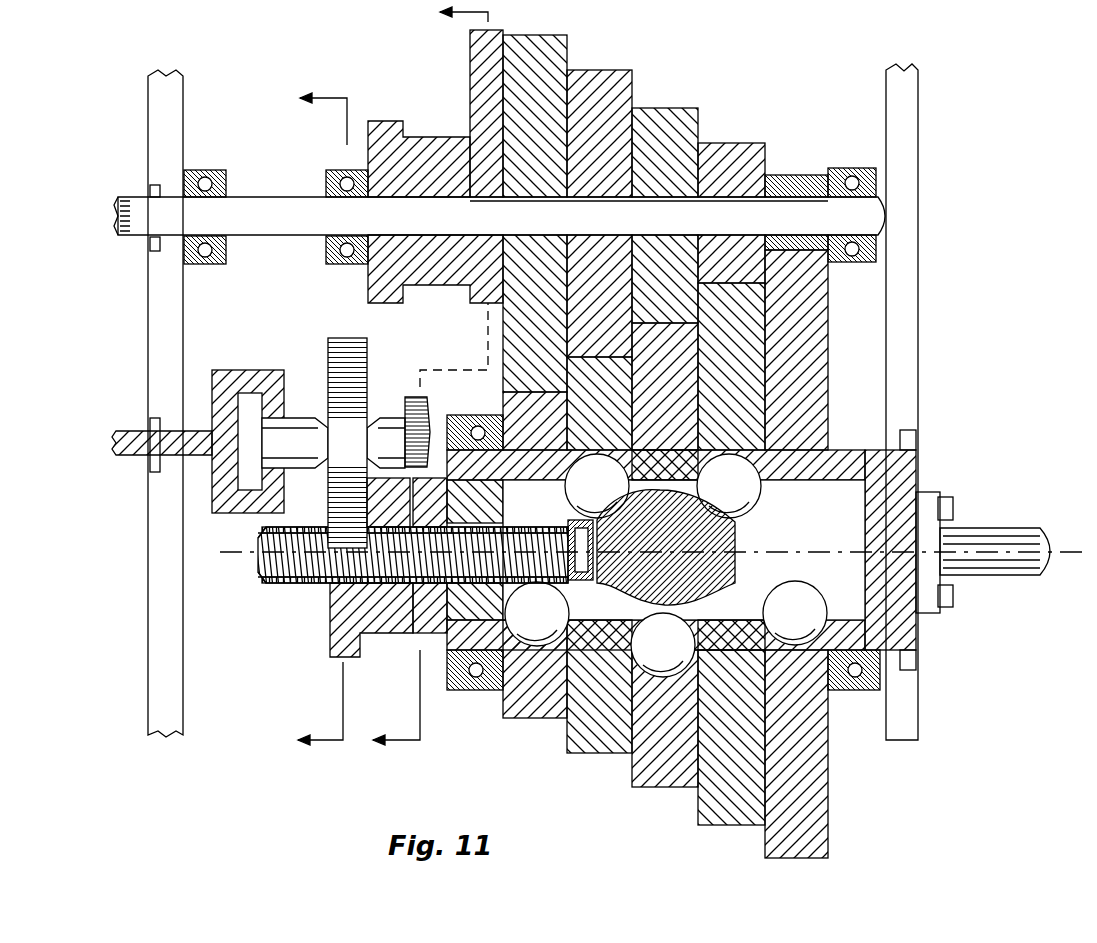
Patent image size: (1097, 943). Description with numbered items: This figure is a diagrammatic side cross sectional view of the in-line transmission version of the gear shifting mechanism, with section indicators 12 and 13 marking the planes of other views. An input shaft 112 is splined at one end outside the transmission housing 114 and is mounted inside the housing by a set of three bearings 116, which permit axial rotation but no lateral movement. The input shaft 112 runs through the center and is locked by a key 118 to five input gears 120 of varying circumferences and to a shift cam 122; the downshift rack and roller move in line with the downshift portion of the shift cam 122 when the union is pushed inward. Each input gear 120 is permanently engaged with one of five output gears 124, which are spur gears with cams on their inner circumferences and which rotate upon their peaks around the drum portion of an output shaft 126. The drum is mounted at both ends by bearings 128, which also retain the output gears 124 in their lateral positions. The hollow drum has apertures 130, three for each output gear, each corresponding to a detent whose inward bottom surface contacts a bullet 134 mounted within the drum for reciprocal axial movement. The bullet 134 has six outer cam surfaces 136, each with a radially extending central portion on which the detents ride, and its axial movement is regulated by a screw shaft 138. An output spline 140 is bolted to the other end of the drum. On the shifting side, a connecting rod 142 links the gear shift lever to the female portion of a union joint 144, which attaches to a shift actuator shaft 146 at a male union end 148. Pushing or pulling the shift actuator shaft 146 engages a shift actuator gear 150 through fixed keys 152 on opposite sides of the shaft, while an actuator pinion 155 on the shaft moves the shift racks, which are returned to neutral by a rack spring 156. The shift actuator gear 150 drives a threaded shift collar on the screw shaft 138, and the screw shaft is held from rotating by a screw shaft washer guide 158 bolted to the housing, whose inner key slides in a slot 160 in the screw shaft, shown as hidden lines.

The section line 12- 12 is at (306, 422).
The section line 13- 13 is at (426, 376).
The input shaft 112 is at (857, 217).
The transmission housing 114 is at (167, 120).
The bearings 116 is at (345, 168).
The key 118 is at (803, 196).
The input gears 120 is at (727, 155).
The shift cam 122 is at (492, 40).
The output gears 124 is at (657, 789).
The output shaft 126 is at (887, 500).
The bearings 128 is at (477, 692).
The apertures 130 is at (818, 642).
The bullet 134 is at (742, 527).
The outer cam surfaces 136 is at (740, 600).
The screw shaft 138 is at (287, 587).
The output spline 140 is at (1005, 542).
The connecting rod 142 is at (137, 441).
The union joint 144 is at (252, 377).
The shift actuator shaft 146 is at (383, 443).
The male union end 148 is at (250, 420).
The shift actuator gear 150 is at (348, 338).
The fixed keys 152 is at (390, 423).
The actuator pinion 155 is at (433, 412).
The rack spring 156 is at (323, 637).
The screw shaft washer guide 158 is at (420, 625).
The slot 160 is at (267, 575).